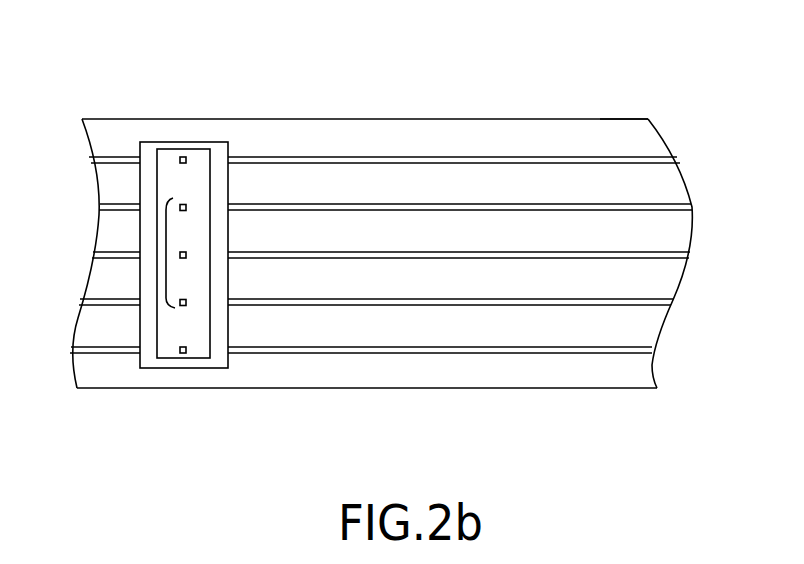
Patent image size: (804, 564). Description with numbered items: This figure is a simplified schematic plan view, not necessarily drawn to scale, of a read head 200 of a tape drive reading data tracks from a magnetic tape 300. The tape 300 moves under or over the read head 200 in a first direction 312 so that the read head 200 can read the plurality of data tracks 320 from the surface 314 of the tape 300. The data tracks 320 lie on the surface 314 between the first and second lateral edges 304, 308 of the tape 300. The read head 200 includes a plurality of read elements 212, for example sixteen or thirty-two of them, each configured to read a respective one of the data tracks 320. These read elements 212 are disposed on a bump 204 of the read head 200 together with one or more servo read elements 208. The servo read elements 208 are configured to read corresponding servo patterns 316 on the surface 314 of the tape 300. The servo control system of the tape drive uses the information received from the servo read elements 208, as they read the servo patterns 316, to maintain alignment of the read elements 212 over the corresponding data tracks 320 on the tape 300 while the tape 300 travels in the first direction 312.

The read head 200 is at (164, 128).
The bump 204 is at (200, 358).
The servo read elements 208 is at (181, 160).
The read elements 212 is at (165, 243).
The magnetic tape 300 is at (552, 106).
The first lateral edge 304 is at (638, 118).
The second lateral edge 308 is at (552, 389).
The first direction 312 is at (372, 102).
The surface 314 is at (602, 128).
The servo patterns 316 is at (657, 158).
The data tracks 320 is at (705, 190).